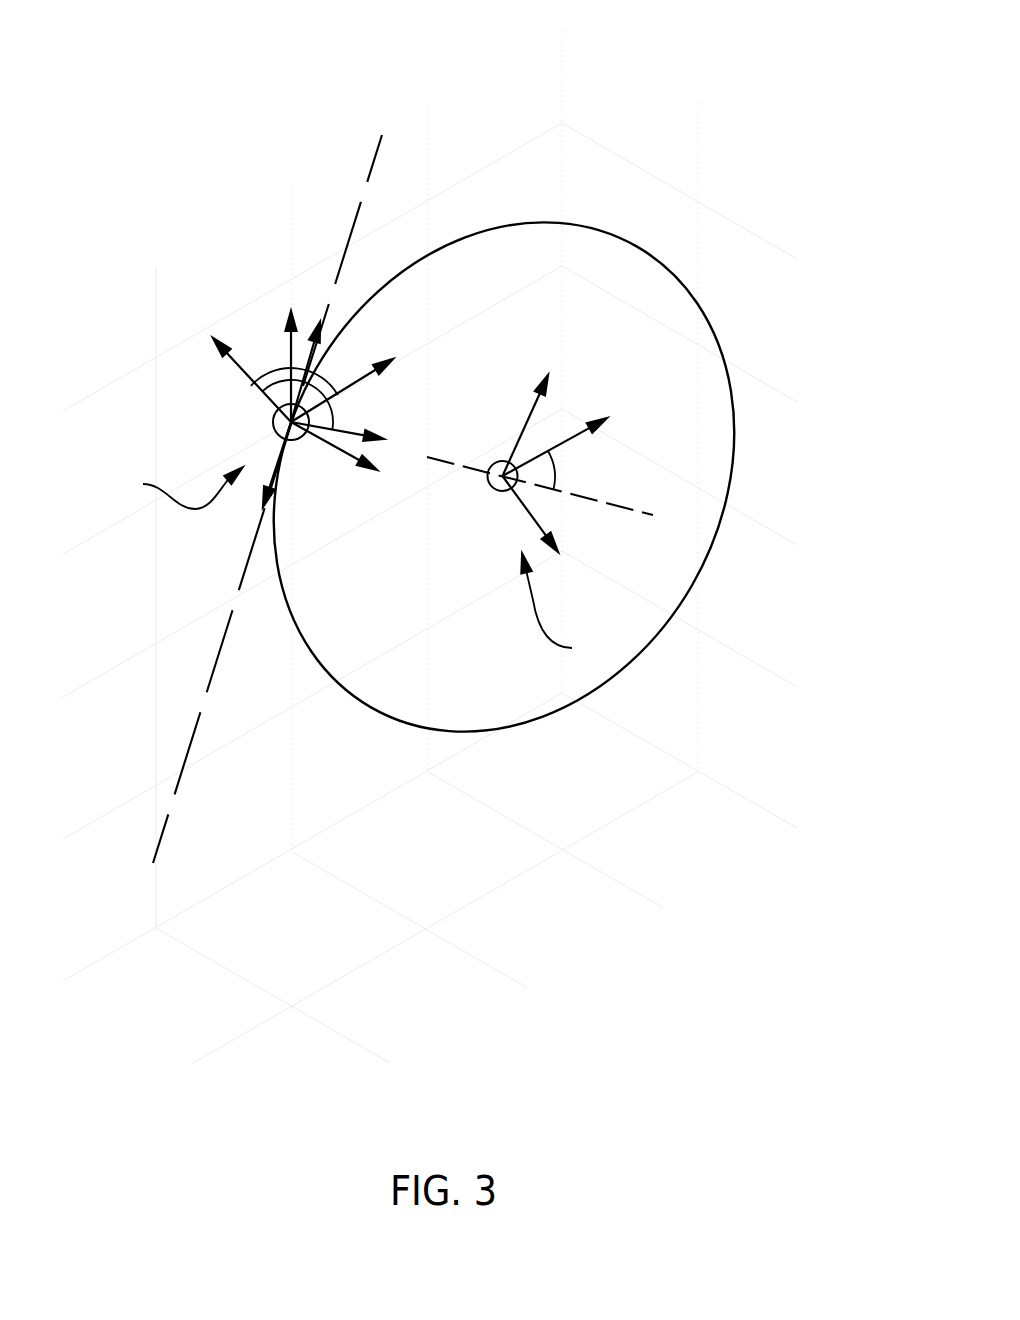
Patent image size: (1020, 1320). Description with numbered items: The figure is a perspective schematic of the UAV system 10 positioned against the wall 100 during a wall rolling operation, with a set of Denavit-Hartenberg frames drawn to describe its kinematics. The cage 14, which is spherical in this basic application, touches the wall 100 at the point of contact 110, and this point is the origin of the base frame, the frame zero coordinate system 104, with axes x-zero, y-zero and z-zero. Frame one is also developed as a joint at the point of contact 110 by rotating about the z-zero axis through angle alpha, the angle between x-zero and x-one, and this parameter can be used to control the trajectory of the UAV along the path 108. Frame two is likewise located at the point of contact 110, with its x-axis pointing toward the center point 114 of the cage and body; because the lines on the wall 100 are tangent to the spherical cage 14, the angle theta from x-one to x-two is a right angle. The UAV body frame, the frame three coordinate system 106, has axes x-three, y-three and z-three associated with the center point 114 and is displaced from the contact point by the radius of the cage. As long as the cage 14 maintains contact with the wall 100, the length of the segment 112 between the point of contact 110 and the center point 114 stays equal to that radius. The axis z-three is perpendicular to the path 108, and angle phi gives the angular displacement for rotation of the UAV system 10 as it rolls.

The UAV system 10 is at (594, 172).
The cage 14 is at (732, 463).
The wall 100 is at (197, 366).
The frame 0 coordinate system 104 is at (159, 488).
The frame 3 coordinate system 106 is at (572, 609).
The path 108 is at (250, 553).
The point of contact 110 is at (294, 440).
The segment 112 is at (442, 460).
The center point 114 is at (503, 492).